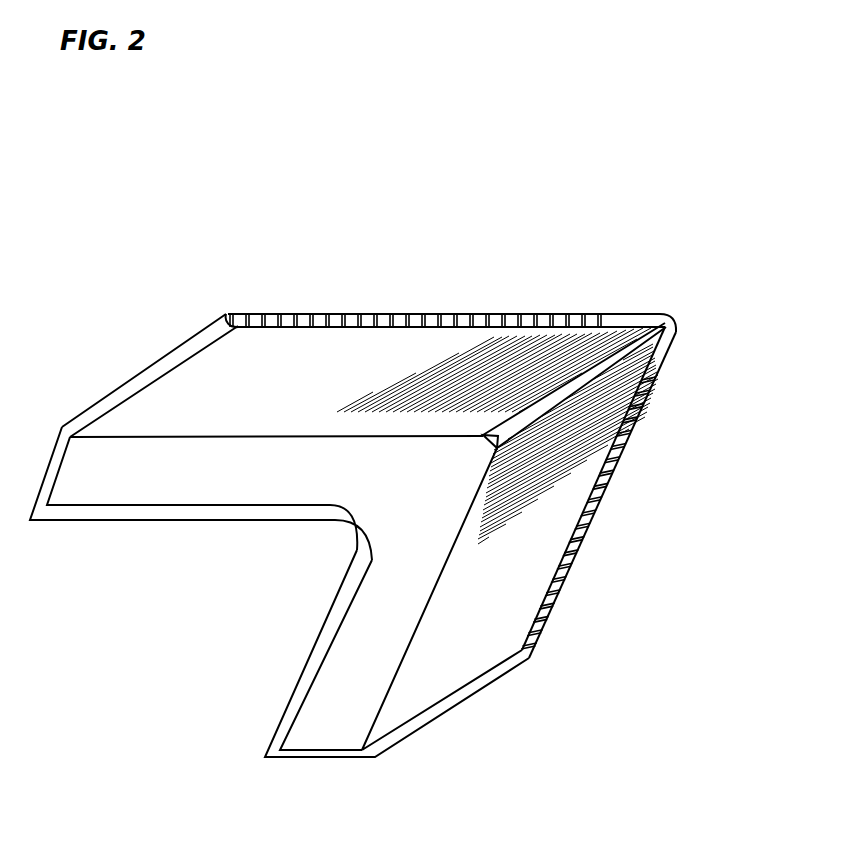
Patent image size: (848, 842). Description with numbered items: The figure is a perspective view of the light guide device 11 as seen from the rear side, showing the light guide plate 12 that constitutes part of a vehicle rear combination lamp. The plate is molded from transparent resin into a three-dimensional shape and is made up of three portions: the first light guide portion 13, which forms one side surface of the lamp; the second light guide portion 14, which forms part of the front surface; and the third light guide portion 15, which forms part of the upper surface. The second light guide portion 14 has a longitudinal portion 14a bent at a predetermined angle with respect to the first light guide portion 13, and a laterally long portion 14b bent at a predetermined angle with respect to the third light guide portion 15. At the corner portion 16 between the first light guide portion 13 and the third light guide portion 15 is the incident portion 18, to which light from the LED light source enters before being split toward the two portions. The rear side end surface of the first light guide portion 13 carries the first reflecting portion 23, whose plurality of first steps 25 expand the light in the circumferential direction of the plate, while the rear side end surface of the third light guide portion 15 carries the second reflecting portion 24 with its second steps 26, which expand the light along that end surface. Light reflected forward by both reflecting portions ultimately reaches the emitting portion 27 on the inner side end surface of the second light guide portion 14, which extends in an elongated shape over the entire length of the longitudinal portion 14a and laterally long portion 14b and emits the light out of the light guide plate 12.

The light guide device 11 is at (319, 266).
The light guide plate 12 is at (130, 376).
The first light guide portion 13 is at (465, 673).
The second light guide portion 14 is at (265, 593).
The longitudinal portion 14a is at (330, 678).
The laterally long portion 14b is at (163, 497).
The third light guide portion 15 is at (192, 368).
The corner portion 16 is at (680, 318).
The incident portion 18 is at (662, 316).
The first reflecting portion 23 is at (585, 563).
The second reflecting portion 24 is at (503, 313).
The first steps 25 is at (616, 476).
The second steps 26 is at (413, 318).
The emitting portion 27 is at (268, 512).